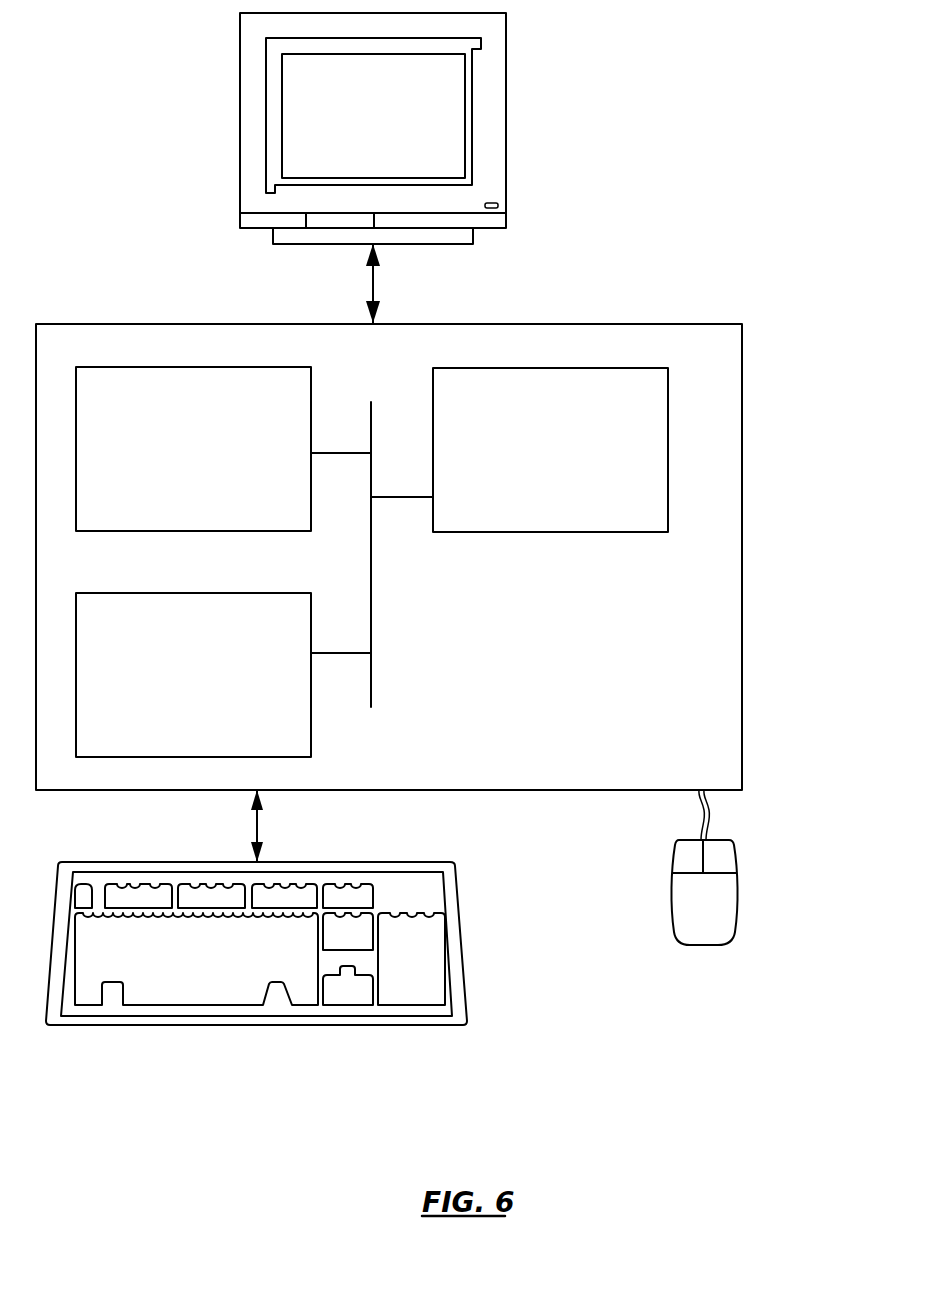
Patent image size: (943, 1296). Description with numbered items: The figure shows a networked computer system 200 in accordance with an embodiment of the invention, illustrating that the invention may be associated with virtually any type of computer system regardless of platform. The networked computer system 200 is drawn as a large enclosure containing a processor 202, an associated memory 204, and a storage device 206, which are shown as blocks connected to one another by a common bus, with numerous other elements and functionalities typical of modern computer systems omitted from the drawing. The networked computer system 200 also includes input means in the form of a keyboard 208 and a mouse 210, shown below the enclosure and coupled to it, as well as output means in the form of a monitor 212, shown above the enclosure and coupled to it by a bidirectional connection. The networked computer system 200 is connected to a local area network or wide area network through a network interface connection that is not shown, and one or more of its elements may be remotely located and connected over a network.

The networked computer system 200 is at (758, 176).
The processor 202 is at (551, 462).
The memory 204 is at (171, 461).
The storage device 206 is at (168, 687).
The keyboard 208 is at (163, 982).
The mouse 210 is at (681, 916).
The monitor 212 is at (351, 132).